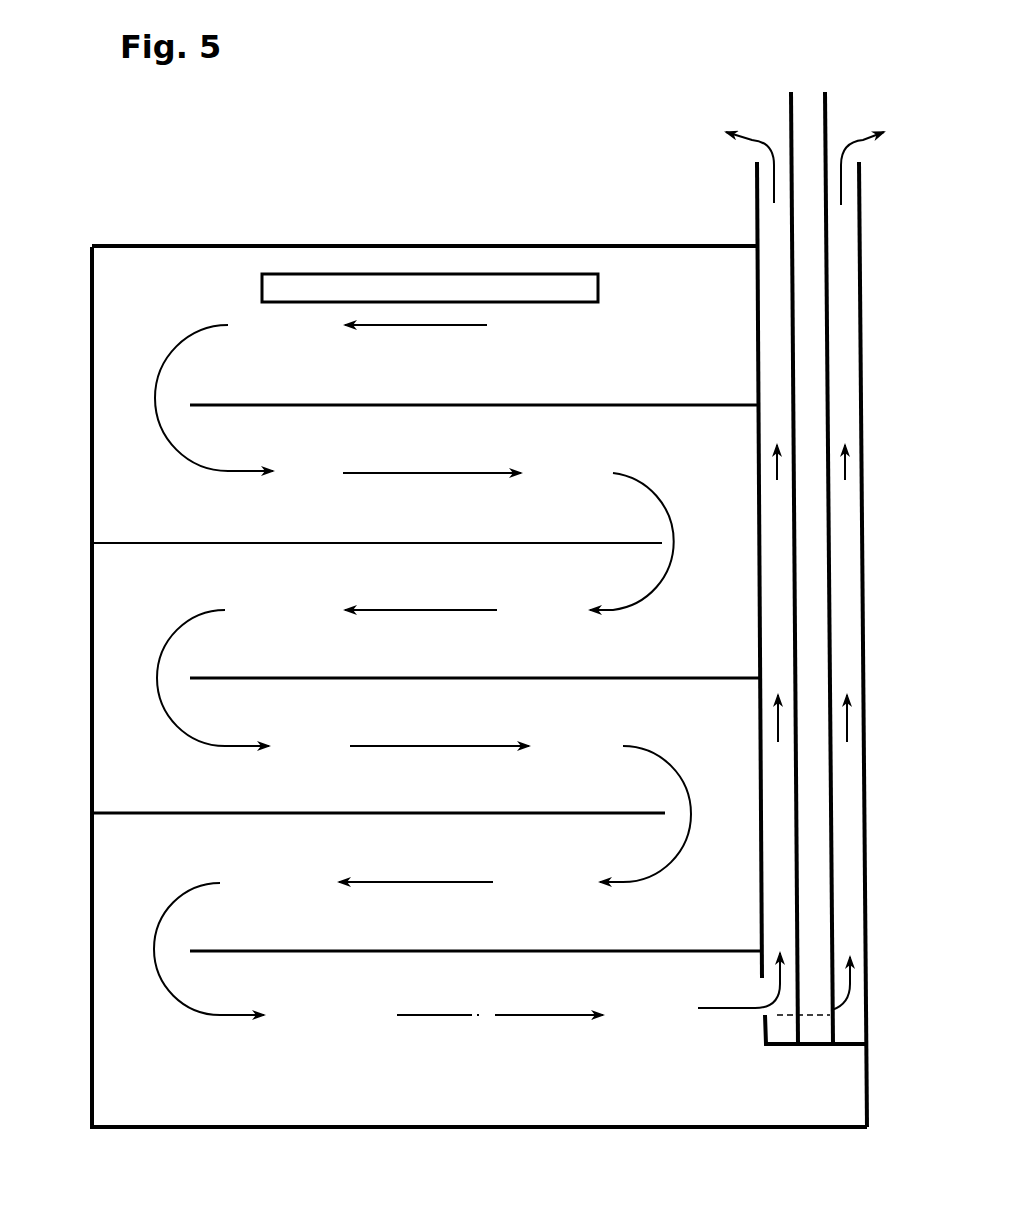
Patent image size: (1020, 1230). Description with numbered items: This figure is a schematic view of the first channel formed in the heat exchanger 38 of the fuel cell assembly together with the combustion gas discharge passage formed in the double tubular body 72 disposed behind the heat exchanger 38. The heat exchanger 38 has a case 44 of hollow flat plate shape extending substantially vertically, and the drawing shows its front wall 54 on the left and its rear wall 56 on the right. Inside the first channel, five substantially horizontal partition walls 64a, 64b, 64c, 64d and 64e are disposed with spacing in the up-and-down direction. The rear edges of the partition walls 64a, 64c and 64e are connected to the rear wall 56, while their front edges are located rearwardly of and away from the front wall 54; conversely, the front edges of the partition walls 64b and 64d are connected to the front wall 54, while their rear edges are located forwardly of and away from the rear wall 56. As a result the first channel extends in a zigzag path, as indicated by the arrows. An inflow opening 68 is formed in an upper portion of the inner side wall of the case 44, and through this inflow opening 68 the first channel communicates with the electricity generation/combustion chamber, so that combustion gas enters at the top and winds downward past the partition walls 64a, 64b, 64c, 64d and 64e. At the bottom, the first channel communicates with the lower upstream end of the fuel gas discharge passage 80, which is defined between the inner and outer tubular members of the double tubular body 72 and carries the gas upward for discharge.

The heat exchanger 38 is at (78, 462).
The case 44 is at (176, 244).
The front wall 54 is at (92, 700).
The rear wall 56 is at (760, 578).
The inflow opening 68 is at (370, 282).
The double tubular body 72 is at (878, 474).
The fuel gas discharge passage 80 is at (775, 332).
The partition wall 64a is at (513, 403).
The partition wall 64b is at (514, 542).
The partition wall 64c is at (526, 677).
The partition wall 64d is at (537, 812).
The partition wall 64e is at (549, 950).